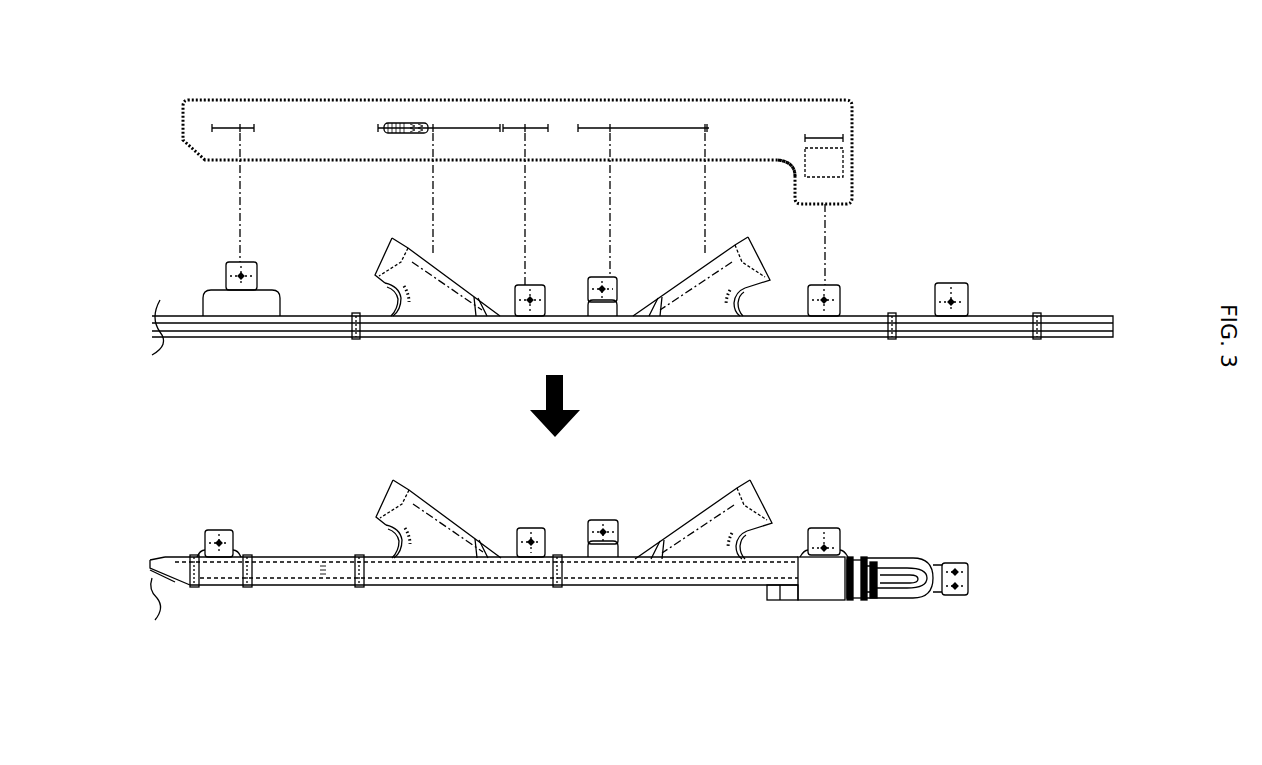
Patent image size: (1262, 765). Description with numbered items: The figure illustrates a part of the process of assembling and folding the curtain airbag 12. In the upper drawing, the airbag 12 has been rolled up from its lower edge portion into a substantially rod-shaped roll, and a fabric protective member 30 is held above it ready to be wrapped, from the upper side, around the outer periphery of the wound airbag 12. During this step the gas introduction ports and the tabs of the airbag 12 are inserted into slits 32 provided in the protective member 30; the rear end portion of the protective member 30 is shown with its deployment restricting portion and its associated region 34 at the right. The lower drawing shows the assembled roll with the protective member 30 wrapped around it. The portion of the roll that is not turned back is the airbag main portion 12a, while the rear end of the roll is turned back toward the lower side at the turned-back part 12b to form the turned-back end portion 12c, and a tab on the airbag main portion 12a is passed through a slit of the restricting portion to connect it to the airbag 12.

The airbag 12 is at (1038, 258).
The airbag main portion 12a is at (168, 592).
The turned-back part of the airbag 12b is at (930, 598).
The turned-back end portion 12c is at (874, 600).
The fabric protective member 30 is at (573, 96).
The slit 32 is at (462, 133).
The connector portion 34 is at (803, 162).